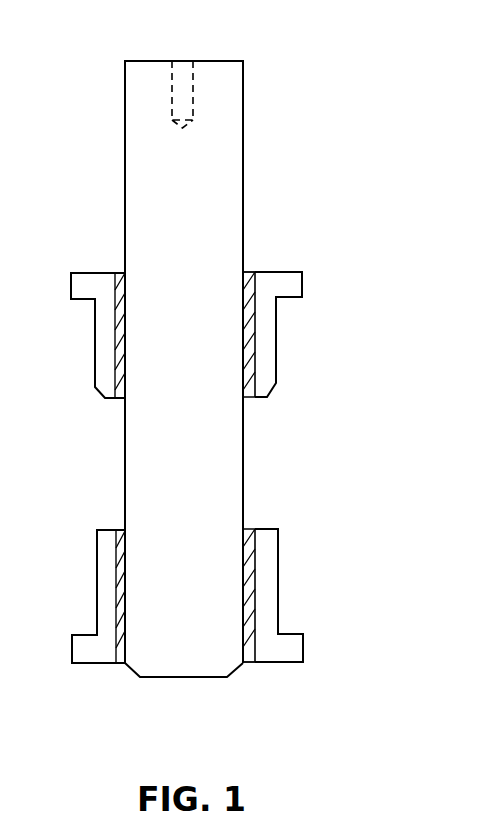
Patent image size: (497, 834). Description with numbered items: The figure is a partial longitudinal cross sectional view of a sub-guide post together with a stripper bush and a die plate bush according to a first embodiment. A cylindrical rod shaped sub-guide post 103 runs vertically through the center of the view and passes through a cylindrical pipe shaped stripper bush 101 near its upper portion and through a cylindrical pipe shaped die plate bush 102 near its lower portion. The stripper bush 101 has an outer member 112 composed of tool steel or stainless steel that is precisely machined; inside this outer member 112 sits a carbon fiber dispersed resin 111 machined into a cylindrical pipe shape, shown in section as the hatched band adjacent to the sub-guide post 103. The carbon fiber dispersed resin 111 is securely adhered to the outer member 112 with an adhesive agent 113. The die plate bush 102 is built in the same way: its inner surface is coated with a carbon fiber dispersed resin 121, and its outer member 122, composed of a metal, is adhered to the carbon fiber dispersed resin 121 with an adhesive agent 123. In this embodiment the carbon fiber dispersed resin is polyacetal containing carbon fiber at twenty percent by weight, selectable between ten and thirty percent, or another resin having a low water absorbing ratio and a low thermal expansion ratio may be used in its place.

The stripper bush 101 is at (232, 294).
The carbon fiber dispersed resin 111 is at (250, 270).
The adhesive agent 113 is at (251, 270).
The outer member 112 is at (290, 287).
The sub-guide post 103 is at (233, 462).
The die plate bush 102 is at (232, 635).
The carbon fiber dispersed resin 121 is at (250, 659).
The adhesive agent 123 is at (255, 661).
The outer member 122 is at (290, 650).